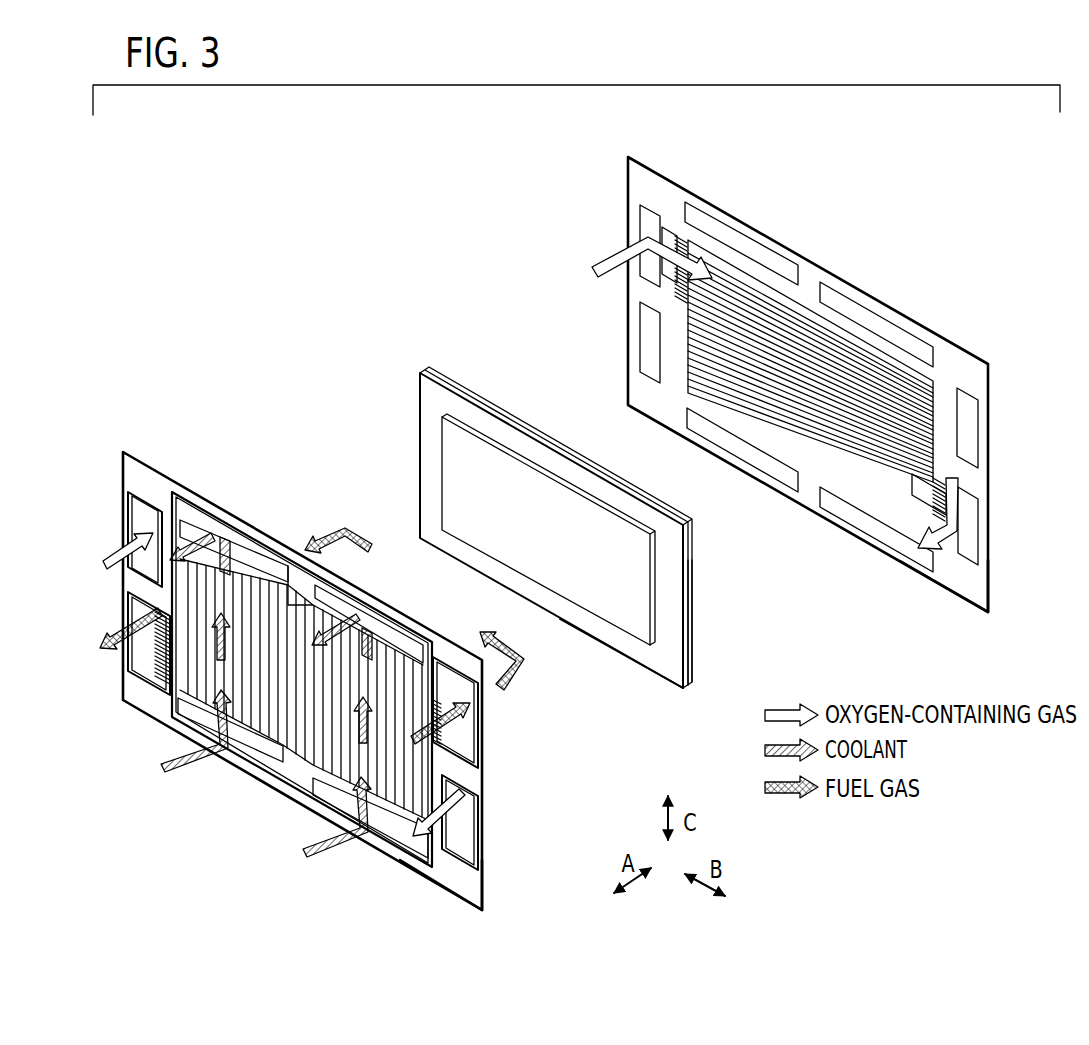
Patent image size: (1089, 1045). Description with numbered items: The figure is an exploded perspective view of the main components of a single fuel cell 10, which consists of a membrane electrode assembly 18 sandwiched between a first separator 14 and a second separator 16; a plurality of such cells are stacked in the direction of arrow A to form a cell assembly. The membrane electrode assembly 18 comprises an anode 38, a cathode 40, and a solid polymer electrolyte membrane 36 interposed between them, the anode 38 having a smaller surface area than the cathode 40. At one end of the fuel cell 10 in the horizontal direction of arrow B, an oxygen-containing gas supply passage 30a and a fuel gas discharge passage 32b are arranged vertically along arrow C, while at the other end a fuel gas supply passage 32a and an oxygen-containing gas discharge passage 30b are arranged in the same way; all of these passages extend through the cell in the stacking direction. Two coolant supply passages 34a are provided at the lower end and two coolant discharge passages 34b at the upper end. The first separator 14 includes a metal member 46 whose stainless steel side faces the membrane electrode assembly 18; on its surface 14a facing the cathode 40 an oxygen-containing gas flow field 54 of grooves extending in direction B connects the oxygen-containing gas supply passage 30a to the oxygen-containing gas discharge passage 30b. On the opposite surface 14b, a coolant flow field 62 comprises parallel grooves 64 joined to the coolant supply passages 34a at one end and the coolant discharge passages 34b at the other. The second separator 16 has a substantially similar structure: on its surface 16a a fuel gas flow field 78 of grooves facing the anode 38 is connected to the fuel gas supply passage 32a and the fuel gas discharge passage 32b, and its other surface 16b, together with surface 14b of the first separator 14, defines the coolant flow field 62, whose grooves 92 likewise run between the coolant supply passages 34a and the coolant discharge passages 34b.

The fuel cell 10 is at (266, 301).
The first separator 14 is at (628, 156).
The surface of the first separator 14a is at (958, 587).
The surface of the first separator 14b is at (978, 592).
The second separator 16 is at (123, 451).
The surface of the second separator 16a is at (470, 890).
The surface of the second separator 16b is at (448, 882).
The membrane electrode assembly 18 is at (420, 372).
The oxygen-containing gas supply passage 30a is at (648, 233).
The oxygen-containing gas discharge passage 30b is at (970, 542).
The fuel gas supply passage 32a is at (970, 440).
The fuel gas discharge passage 32b is at (648, 331).
The coolant supply passages 34a is at (733, 442).
The coolant discharge passages 34b is at (750, 248).
The solid polymer electrolyte membrane 36 is at (667, 670).
The anode 38 is at (483, 500).
The cathode 40 is at (690, 634).
The metal member 46 is at (840, 424).
The oxygen-containing gas flow field 54 is at (715, 352).
The coolant flow field 62 is at (205, 690).
The grooves 64 is at (797, 330).
The fuel gas flow field 78 is at (274, 577).
The grooves 92 is at (293, 737).